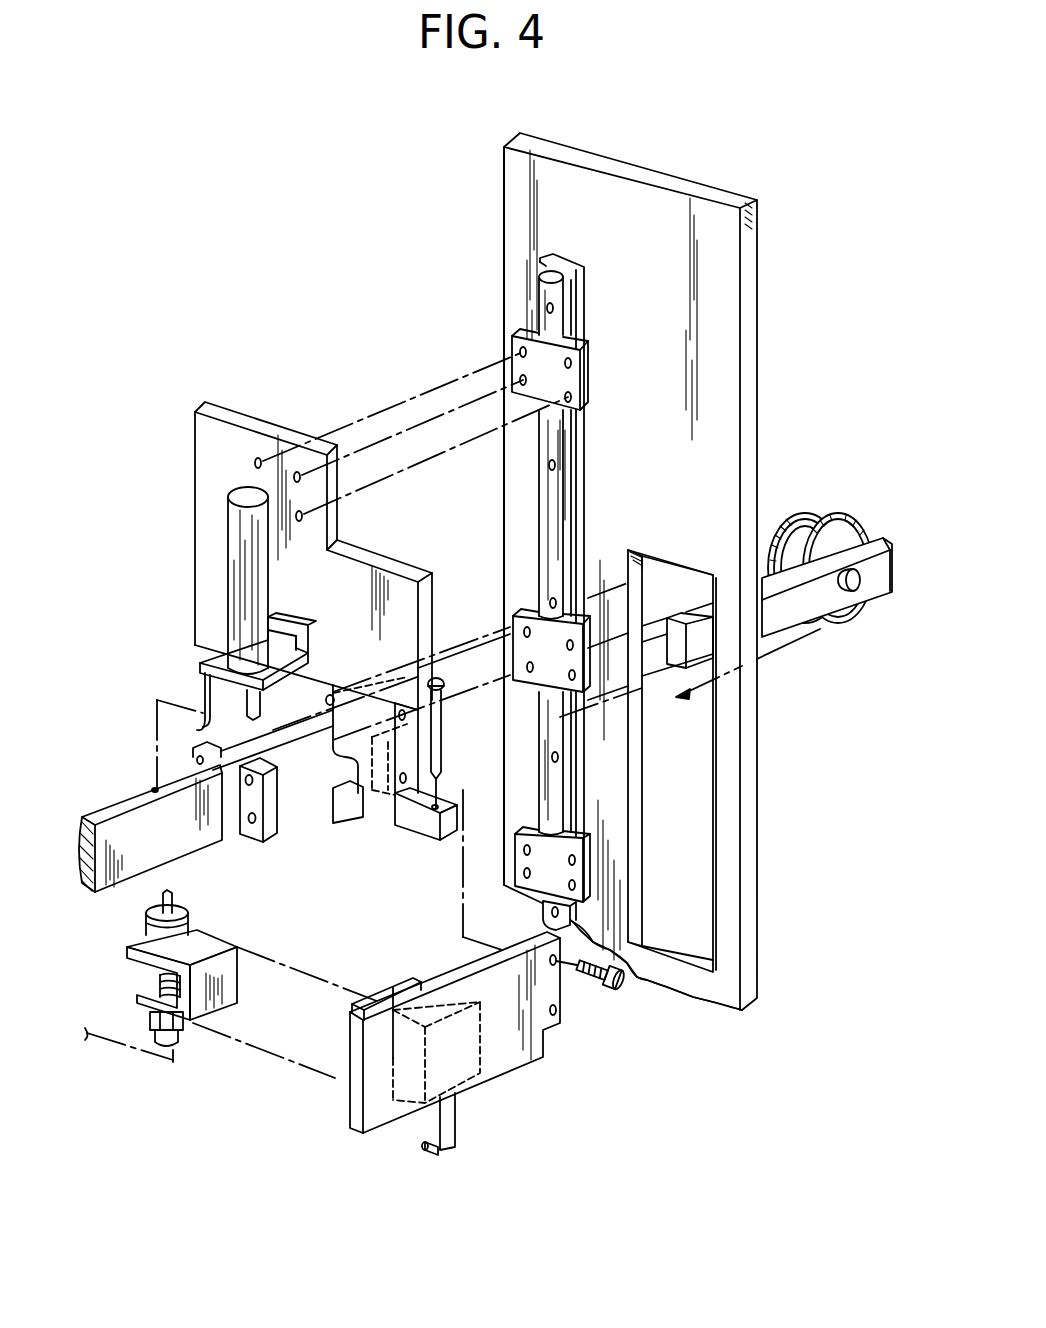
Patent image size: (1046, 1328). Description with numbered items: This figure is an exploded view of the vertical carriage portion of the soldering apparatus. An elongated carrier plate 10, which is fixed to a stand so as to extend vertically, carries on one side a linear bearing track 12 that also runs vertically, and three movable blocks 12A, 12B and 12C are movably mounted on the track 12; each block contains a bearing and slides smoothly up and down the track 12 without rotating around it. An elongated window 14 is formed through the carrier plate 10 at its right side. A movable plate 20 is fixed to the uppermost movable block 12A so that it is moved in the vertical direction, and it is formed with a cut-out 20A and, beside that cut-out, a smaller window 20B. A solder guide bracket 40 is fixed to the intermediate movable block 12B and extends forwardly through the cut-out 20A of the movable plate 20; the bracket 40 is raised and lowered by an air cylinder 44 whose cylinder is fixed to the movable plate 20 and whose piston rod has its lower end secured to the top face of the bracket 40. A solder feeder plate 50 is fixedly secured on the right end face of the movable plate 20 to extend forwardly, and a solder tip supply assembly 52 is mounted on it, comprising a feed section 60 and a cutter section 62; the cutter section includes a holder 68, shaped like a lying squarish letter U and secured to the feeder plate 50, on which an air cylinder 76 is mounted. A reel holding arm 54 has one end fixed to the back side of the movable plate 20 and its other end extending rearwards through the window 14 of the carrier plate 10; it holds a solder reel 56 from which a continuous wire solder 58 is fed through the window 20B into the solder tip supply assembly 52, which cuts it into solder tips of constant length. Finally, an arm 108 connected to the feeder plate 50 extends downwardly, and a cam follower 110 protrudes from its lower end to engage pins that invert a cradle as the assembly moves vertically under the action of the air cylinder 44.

The carrier plate 10 is at (512, 197).
The linear bearing track 12 is at (538, 275).
The uppermost movable block 12A is at (530, 328).
The intermediate movable block 12B is at (520, 612).
The movable block 12C is at (530, 827).
The window 14 is at (648, 800).
The movable plate 20 is at (245, 403).
The cut-out 20A is at (335, 697).
The window 20B is at (352, 817).
The solder guide bracket 40 is at (113, 800).
The air cylinder 44 is at (232, 585).
The solder feeder plate 50 is at (543, 1040).
The solder tip supply assembly 52 is at (388, 1098).
The reel holding arm 54 is at (875, 600).
The solder reel 56 is at (803, 512).
The wire solder 58 is at (787, 643).
The feed section 60 is at (397, 977).
The cutter section 62 is at (198, 1043).
The holder 68 is at (237, 962).
The air cylinder 76 is at (190, 913).
The arm 108 is at (457, 1117).
The cam follower 110 is at (430, 1150).